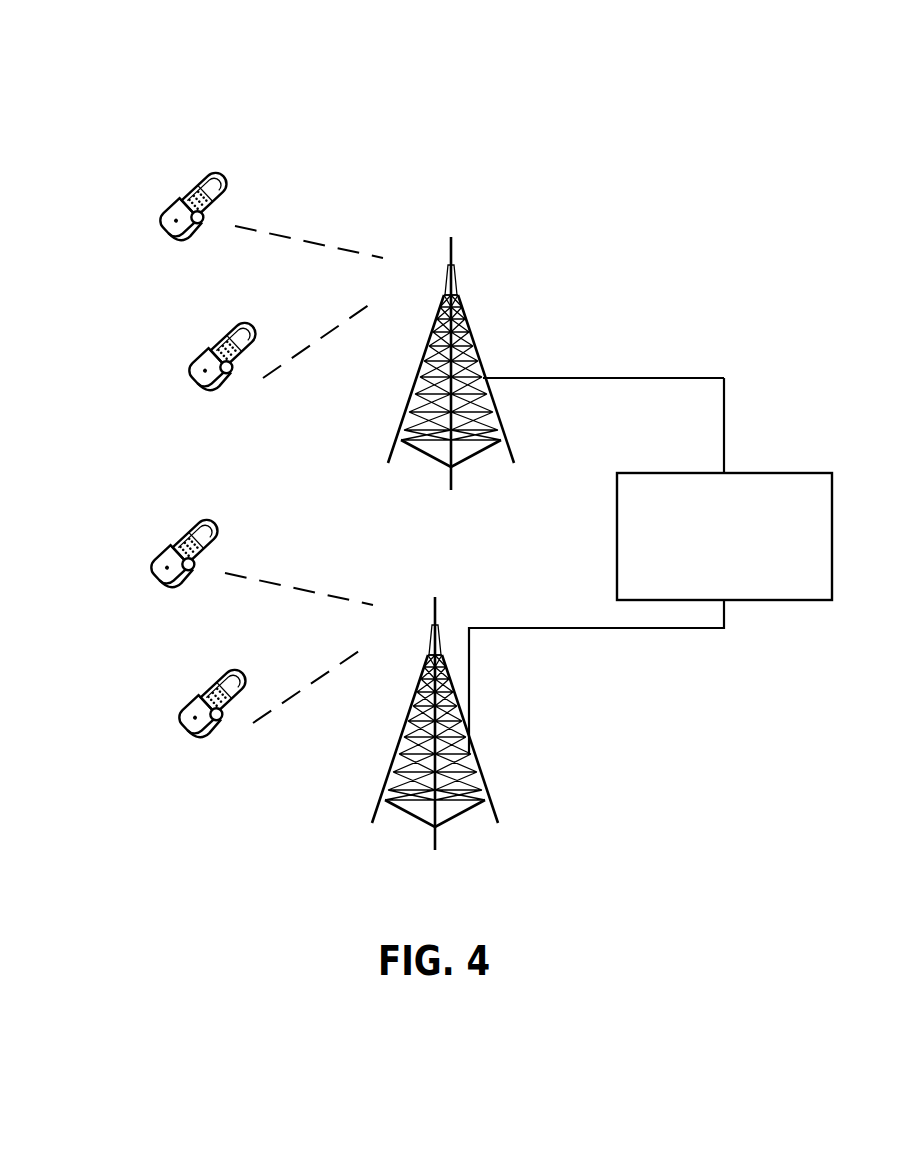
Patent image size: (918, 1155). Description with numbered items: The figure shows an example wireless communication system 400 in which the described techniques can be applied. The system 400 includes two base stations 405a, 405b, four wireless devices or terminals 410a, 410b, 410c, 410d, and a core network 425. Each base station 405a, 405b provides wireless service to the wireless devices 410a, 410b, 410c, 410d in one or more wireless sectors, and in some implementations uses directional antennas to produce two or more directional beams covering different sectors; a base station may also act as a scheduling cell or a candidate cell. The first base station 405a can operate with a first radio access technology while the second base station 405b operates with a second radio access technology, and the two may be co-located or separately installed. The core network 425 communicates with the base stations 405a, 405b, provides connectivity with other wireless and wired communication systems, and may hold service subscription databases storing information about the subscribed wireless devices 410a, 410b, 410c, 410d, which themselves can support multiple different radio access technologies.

The wireless communication system 400 is at (591, 77).
The base station 405a is at (466, 319).
The base station 405b is at (440, 627).
The wireless device 410a is at (192, 176).
The wireless device 410b is at (222, 326).
The wireless device 410c is at (134, 543).
The wireless device 410d is at (212, 672).
The core network 425 is at (630, 473).